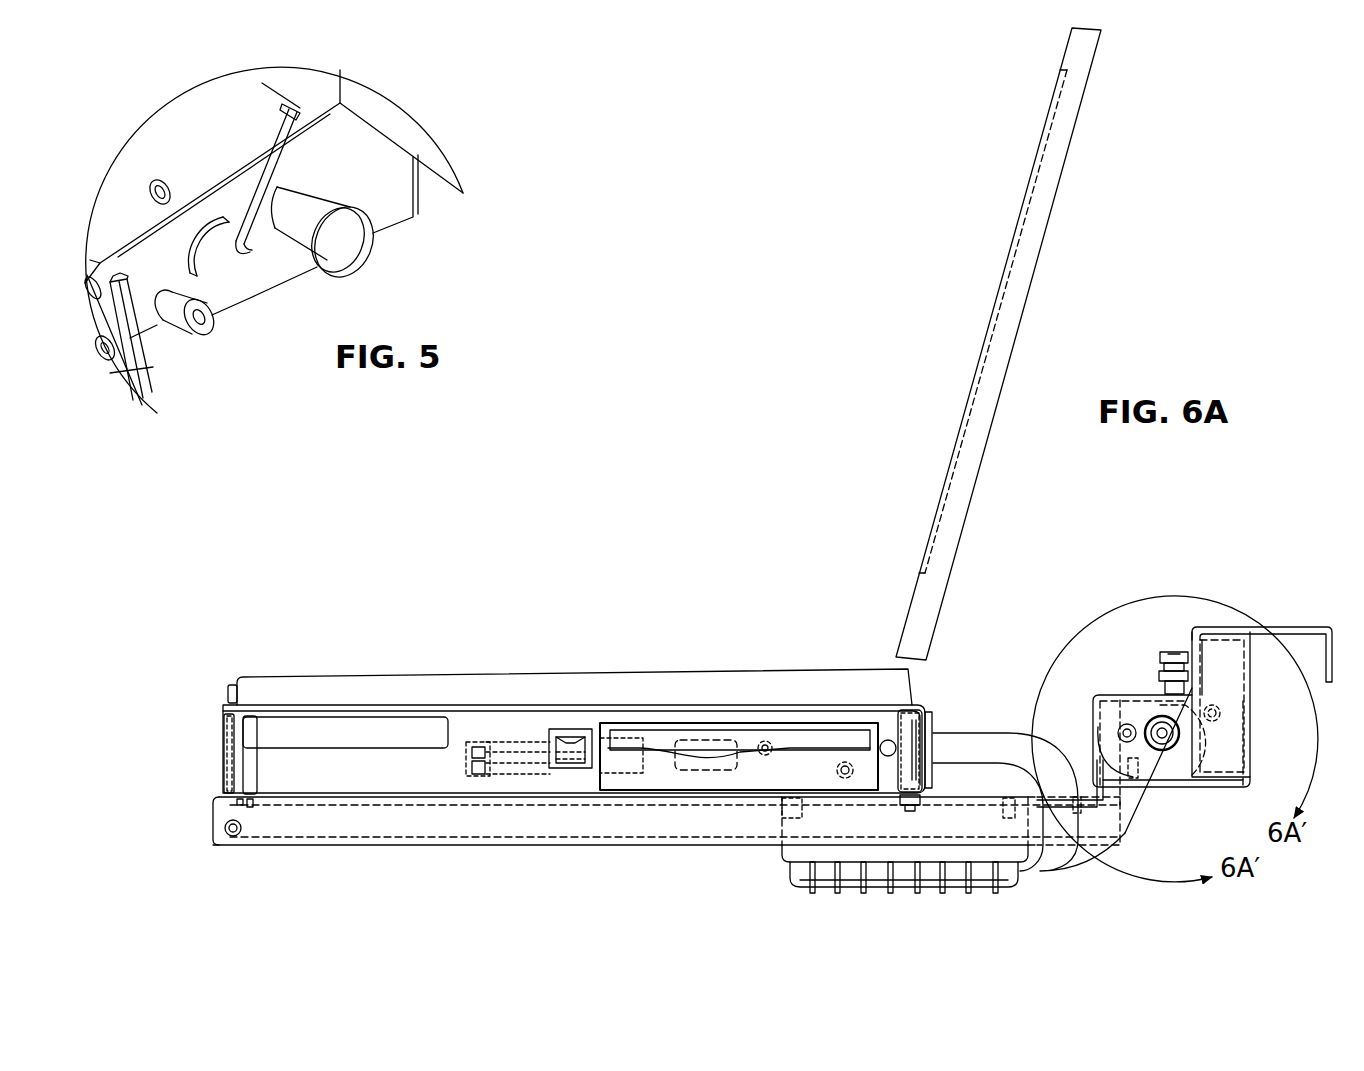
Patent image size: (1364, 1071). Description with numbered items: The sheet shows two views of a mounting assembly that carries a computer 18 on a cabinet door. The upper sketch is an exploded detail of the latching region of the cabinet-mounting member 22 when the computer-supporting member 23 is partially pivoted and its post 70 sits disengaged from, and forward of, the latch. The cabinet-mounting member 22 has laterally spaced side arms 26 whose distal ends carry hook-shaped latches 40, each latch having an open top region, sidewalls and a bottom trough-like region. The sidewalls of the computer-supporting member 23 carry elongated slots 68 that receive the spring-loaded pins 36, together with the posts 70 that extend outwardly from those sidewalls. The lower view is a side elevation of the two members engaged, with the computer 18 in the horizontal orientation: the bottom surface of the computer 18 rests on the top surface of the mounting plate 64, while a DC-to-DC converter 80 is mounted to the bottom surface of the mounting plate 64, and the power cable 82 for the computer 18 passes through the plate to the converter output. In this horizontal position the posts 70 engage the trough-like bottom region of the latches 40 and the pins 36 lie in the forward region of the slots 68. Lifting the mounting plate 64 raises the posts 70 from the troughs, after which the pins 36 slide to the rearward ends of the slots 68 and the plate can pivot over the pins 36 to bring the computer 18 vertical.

In FIG. 6A, the computer 18 is at (605, 680).
In FIG. 5, the cabinet-mounting member 22 is at (358, 143).
In FIG. 6A, the cabinet-mounting member 22 is at (367, 797).
In FIG. 5, the computer-supporting member 23 is at (156, 335).
In FIG. 5, the side arms 26 is at (393, 218).
In FIG. 6A, the spring-loaded pin 36 is at (1160, 726).
In FIG. 5, the hook-shaped latch 40 is at (269, 263).
In FIG. 6A, the mounting plate 64 is at (578, 827).
In FIG. 5, the elongated slot 68 is at (247, 227).
In FIG. 5, the post 70 is at (197, 330).
In FIG. 6A, the DC-to-DC converter 80 is at (790, 853).
In FIG. 6A, the power cable 82 is at (970, 742).